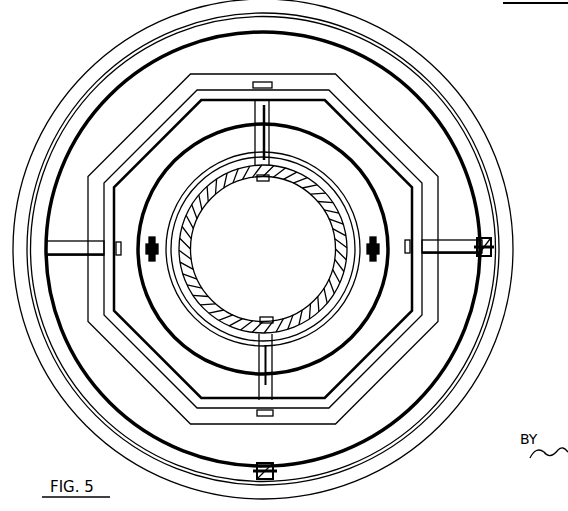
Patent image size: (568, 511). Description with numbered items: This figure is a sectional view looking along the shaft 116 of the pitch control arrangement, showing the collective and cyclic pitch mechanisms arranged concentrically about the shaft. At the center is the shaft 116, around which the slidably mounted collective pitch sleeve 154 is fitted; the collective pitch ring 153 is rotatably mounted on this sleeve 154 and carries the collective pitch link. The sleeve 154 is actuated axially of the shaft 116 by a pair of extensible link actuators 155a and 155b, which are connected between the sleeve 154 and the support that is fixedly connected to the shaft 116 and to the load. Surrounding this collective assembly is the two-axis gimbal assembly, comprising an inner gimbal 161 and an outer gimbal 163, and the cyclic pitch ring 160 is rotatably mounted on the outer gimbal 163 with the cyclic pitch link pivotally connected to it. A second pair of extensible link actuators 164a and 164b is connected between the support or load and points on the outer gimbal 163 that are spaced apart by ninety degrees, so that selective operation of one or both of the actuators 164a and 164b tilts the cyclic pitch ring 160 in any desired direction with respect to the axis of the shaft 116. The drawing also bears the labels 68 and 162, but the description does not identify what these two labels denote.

The locating stem 68 is at (257, 140).
The shaft 116 is at (285, 185).
The collective pitch ring 153 is at (362, 163).
The collective pitch sleeve 154 is at (307, 160).
The extensible link actuator 155a is at (184, 250).
The extensible link actuator 155b is at (345, 250).
The cyclic pitch ring 160 is at (492, 170).
The inner gimbal 161 is at (377, 338).
The spoke 162 is at (455, 256).
The outer gimbal 163 is at (472, 322).
The extensible link actuator 164a is at (493, 244).
The extensible link actuator 164b is at (270, 464).